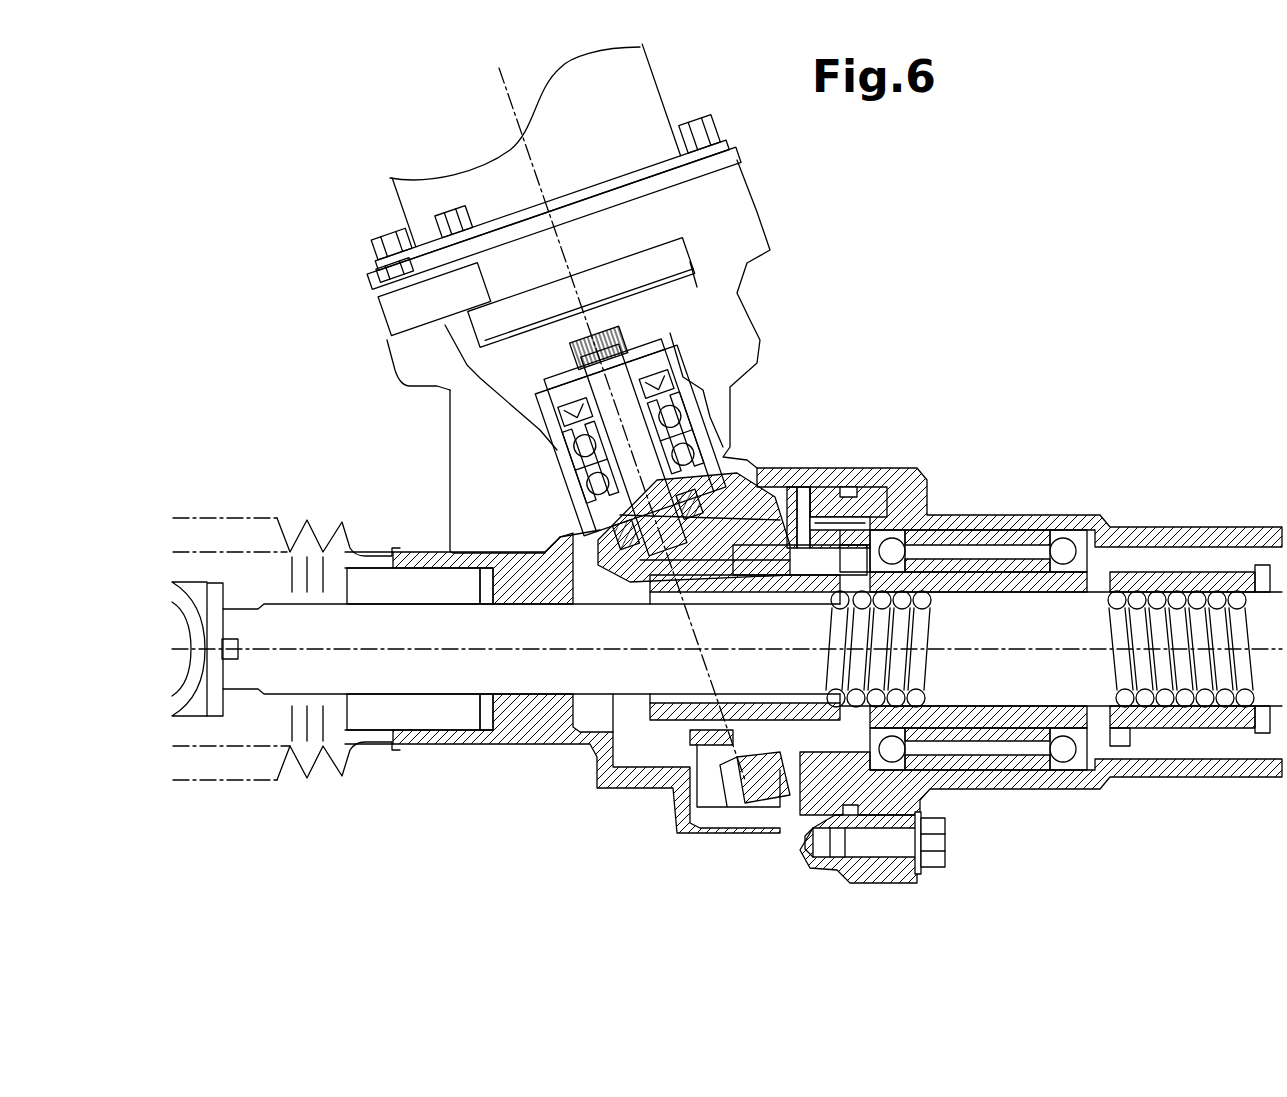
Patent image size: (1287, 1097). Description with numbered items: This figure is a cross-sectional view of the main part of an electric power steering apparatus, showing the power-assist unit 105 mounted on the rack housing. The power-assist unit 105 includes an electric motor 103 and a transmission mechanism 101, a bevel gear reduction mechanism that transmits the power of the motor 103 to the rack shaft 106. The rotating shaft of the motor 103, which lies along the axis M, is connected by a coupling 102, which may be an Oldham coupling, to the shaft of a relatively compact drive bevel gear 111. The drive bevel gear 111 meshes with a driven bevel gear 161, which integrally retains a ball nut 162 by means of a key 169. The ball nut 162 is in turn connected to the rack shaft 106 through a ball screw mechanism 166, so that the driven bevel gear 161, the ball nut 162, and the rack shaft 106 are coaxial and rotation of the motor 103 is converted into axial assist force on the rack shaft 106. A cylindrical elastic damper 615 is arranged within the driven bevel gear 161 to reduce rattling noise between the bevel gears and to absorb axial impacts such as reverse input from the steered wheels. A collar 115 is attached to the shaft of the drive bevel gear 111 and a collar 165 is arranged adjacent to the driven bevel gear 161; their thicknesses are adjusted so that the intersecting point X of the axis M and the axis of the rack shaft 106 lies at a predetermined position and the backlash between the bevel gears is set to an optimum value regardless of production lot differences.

The axis of the drive bevel gear M is at (512, 95).
The electric motor 103 is at (655, 115).
The coupling 102 is at (607, 313).
The power-assist unit 105 is at (836, 318).
The transmission mechanism 101 is at (736, 487).
The driven bevel gear 161 is at (790, 497).
The key 169 is at (823, 567).
The ball nut 162 is at (940, 580).
The rack shaft 106 is at (1015, 610).
The ball screw mechanism 166 is at (1200, 590).
The collar 115 is at (595, 540).
The drive bevel gear 111 is at (580, 532).
The intersecting point X is at (706, 646).
The damper 615 is at (758, 802).
The collar 165 is at (920, 795).